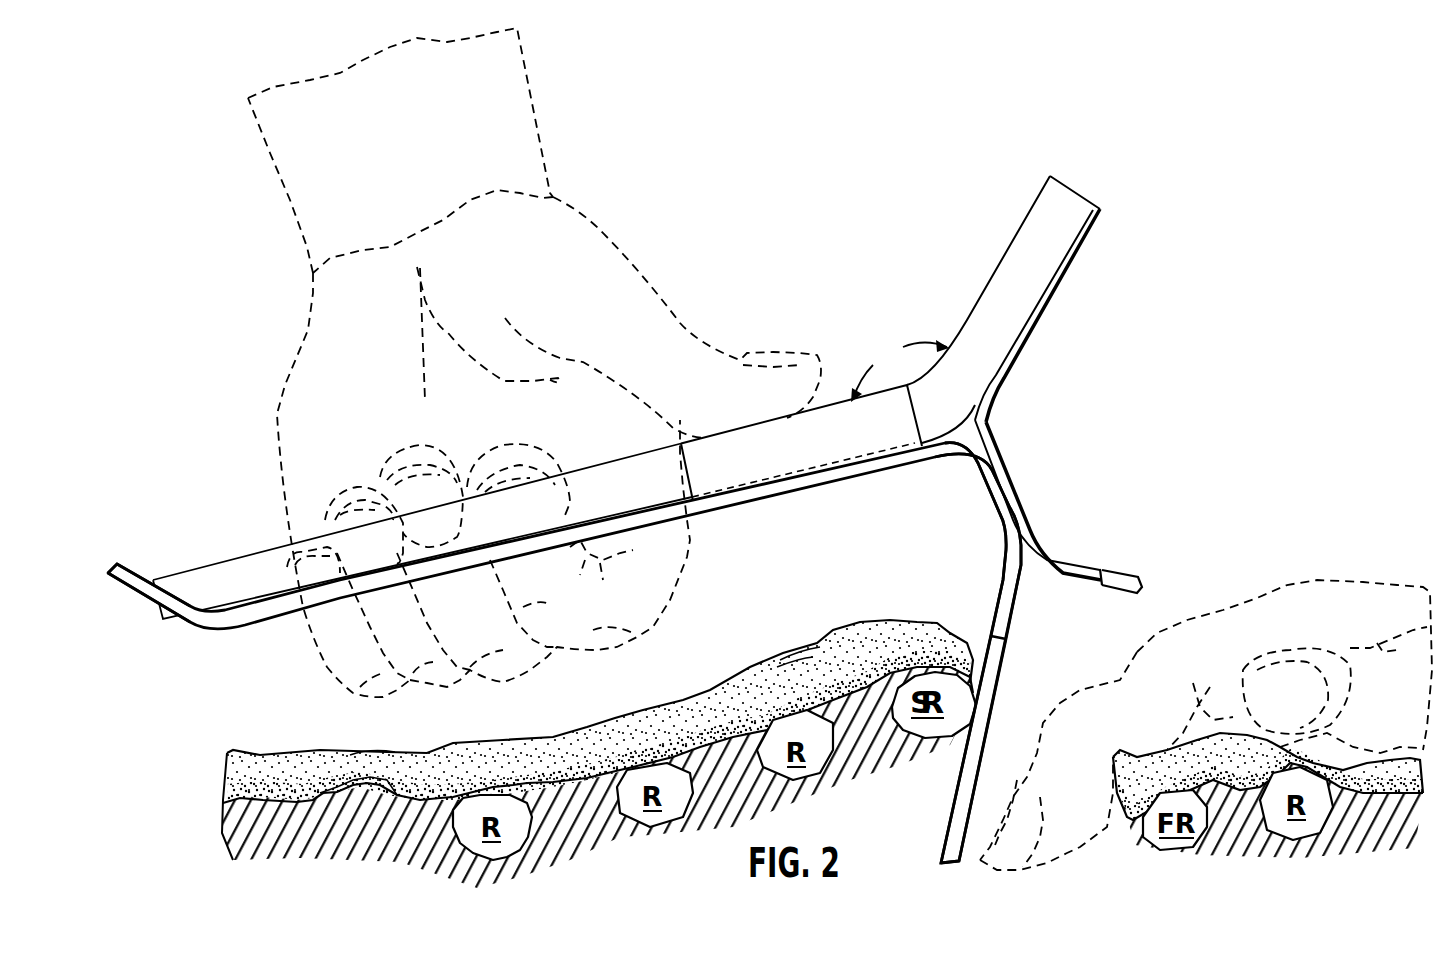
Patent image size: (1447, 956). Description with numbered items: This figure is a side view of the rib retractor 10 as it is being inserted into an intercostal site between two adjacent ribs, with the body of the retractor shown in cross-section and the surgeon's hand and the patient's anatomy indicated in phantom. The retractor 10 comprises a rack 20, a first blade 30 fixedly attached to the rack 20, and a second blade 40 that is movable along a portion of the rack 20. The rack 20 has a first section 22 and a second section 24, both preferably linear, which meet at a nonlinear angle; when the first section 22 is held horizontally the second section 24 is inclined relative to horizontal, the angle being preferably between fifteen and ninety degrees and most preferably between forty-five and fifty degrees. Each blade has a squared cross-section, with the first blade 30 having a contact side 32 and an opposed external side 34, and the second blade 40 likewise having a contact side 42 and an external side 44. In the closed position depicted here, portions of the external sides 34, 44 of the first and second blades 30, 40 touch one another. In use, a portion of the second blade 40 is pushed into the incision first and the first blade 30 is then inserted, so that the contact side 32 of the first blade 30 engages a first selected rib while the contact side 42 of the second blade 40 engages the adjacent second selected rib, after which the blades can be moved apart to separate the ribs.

The rib retractor 10 is at (625, 500).
The rack 20 is at (223, 553).
The first section 22 is at (995, 266).
The second section 24 is at (178, 622).
The first blade 30 is at (1028, 467).
The contact side 32 is at (1027, 520).
The external side 34 is at (1083, 583).
The second blade 40 is at (978, 497).
The contact side 42 is at (1004, 540).
The external side 44 is at (1011, 618).